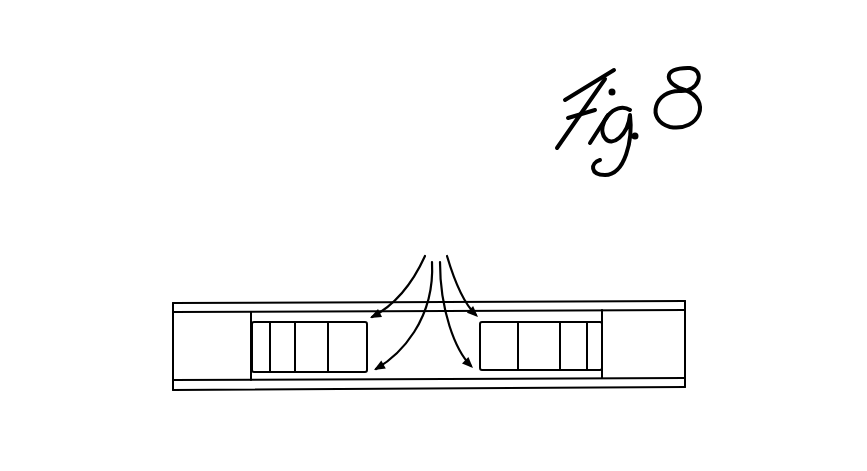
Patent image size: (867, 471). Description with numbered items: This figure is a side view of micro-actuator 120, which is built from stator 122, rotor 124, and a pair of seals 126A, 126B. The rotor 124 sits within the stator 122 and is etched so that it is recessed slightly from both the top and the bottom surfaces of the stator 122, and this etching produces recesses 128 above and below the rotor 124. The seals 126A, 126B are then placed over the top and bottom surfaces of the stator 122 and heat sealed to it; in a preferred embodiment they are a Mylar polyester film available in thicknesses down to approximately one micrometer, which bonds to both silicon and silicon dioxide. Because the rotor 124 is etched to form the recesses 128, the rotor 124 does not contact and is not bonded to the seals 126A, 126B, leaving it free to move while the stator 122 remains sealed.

The micro-actuator 120 is at (181, 131).
The stator 122 is at (183, 353).
The rotor 124 is at (350, 362).
The seal 126A is at (588, 301).
The seal 126B is at (658, 388).
The recesses 128 is at (424, 290).